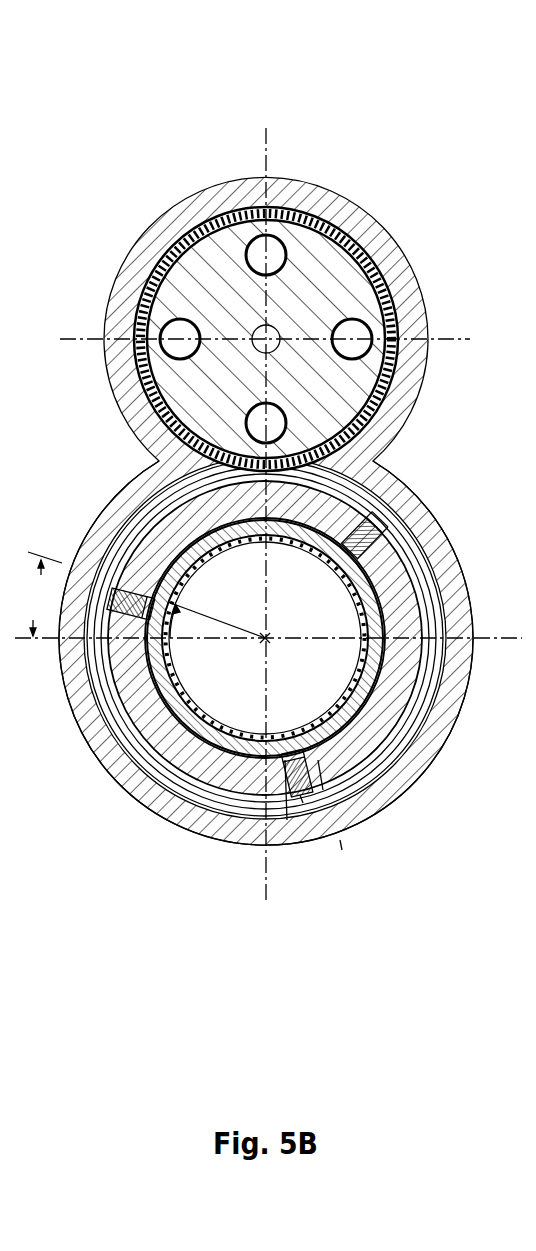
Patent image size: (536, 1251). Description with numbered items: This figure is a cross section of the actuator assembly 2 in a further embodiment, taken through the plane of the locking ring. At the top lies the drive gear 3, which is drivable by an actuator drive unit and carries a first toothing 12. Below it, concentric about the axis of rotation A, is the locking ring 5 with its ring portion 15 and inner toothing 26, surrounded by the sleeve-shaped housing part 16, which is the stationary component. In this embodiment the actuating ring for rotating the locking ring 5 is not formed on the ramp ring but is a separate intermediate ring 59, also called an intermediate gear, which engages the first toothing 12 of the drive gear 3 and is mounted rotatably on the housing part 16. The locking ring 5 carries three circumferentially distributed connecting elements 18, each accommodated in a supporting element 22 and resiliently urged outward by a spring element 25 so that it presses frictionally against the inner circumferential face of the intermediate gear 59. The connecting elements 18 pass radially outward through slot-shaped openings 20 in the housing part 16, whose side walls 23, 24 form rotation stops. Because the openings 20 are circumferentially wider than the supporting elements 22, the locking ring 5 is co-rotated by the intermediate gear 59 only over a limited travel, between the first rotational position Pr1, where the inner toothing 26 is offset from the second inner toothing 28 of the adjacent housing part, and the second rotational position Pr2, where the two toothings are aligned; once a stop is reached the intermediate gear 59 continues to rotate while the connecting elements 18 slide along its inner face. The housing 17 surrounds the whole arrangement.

The actuator assembly 2 is at (324, 88).
The drive gear 3 is at (355, 278).
The locking ring 5 is at (380, 608).
The first toothing 12 is at (338, 212).
The ring portion 15 is at (425, 683).
The sleeve-shaped housing part 16 is at (395, 582).
The housing 17 is at (122, 487).
The connecting elements 18 is at (397, 522).
The openings 20 is at (337, 807).
The supporting elements 22 is at (380, 528).
The side wall 23 is at (287, 820).
The side wall 24 is at (355, 505).
The spring element 25 is at (370, 765).
The inner toothing 26 is at (362, 642).
The second inner toothing 28 is at (332, 717).
The intermediate ring 59 is at (390, 547).
The axis of rotation A is at (276, 624).
The first rotational position Pr1 is at (303, 803).
The second rotational position Pr2 is at (342, 850).